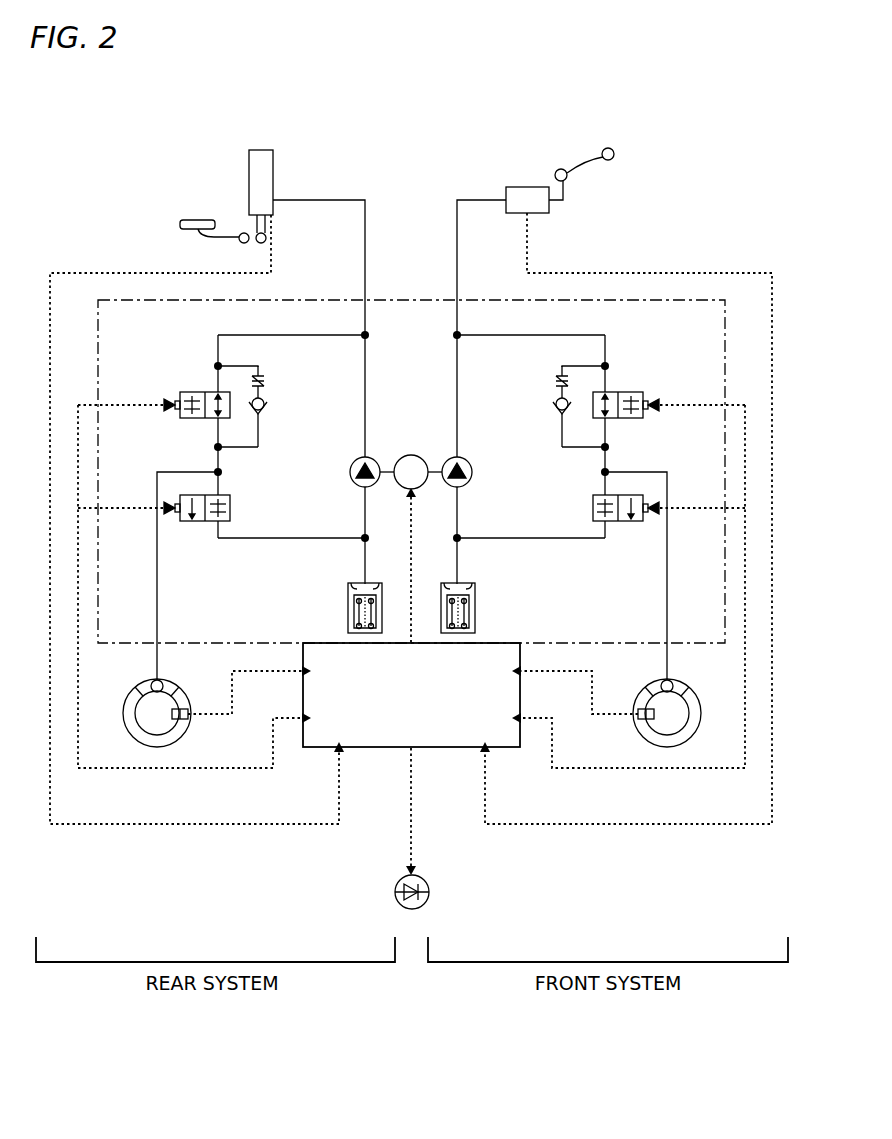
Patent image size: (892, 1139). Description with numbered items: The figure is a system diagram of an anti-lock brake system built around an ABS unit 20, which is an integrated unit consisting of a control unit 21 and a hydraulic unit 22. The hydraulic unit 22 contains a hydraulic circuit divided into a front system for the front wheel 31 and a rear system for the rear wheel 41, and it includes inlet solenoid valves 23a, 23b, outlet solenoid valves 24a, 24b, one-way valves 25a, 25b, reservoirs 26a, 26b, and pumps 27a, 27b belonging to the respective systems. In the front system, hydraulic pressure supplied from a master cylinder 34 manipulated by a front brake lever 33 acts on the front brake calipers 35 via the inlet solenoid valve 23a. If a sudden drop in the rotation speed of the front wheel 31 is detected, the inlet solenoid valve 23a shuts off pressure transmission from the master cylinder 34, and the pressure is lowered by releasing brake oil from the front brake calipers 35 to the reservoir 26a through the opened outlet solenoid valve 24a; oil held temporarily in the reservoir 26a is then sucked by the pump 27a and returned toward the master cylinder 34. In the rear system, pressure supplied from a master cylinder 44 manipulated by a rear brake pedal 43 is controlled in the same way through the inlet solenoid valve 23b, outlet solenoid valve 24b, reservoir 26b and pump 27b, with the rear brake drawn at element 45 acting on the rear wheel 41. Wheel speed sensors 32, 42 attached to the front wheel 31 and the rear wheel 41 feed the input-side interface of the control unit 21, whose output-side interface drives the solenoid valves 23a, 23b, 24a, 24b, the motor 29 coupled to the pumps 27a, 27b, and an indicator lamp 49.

The ABS unit 20 is at (399, 292).
The control unit 21 is at (508, 643).
The hydraulic unit 22 is at (505, 298).
The inlet solenoid valve 23a is at (627, 392).
The inlet solenoid valve 23b is at (196, 392).
The outlet solenoid valve 24a is at (597, 495).
The outlet solenoid valve 24b is at (228, 495).
The one-way valve 25a is at (558, 385).
The one-way valve 25b is at (262, 385).
The reservoir 26a is at (472, 583).
The reservoir 26b is at (352, 583).
The pump 27a is at (468, 460).
The pump 27b is at (356, 460).
The motor 29 is at (414, 455).
The front wheel 31 is at (700, 698).
The wheel speed sensor 32 is at (642, 720).
The front brake lever 33 is at (592, 176).
The master cylinder 34 is at (527, 187).
The front brake calipers 35 is at (674, 681).
The rear wheel 41 is at (126, 698).
The wheel speed sensor 42 is at (183, 720).
The rear brake pedal 43 is at (195, 219).
The master cylinder 44 is at (259, 150).
The rear wheel brake 45 is at (150, 681).
The indicator lamp 49 is at (422, 878).